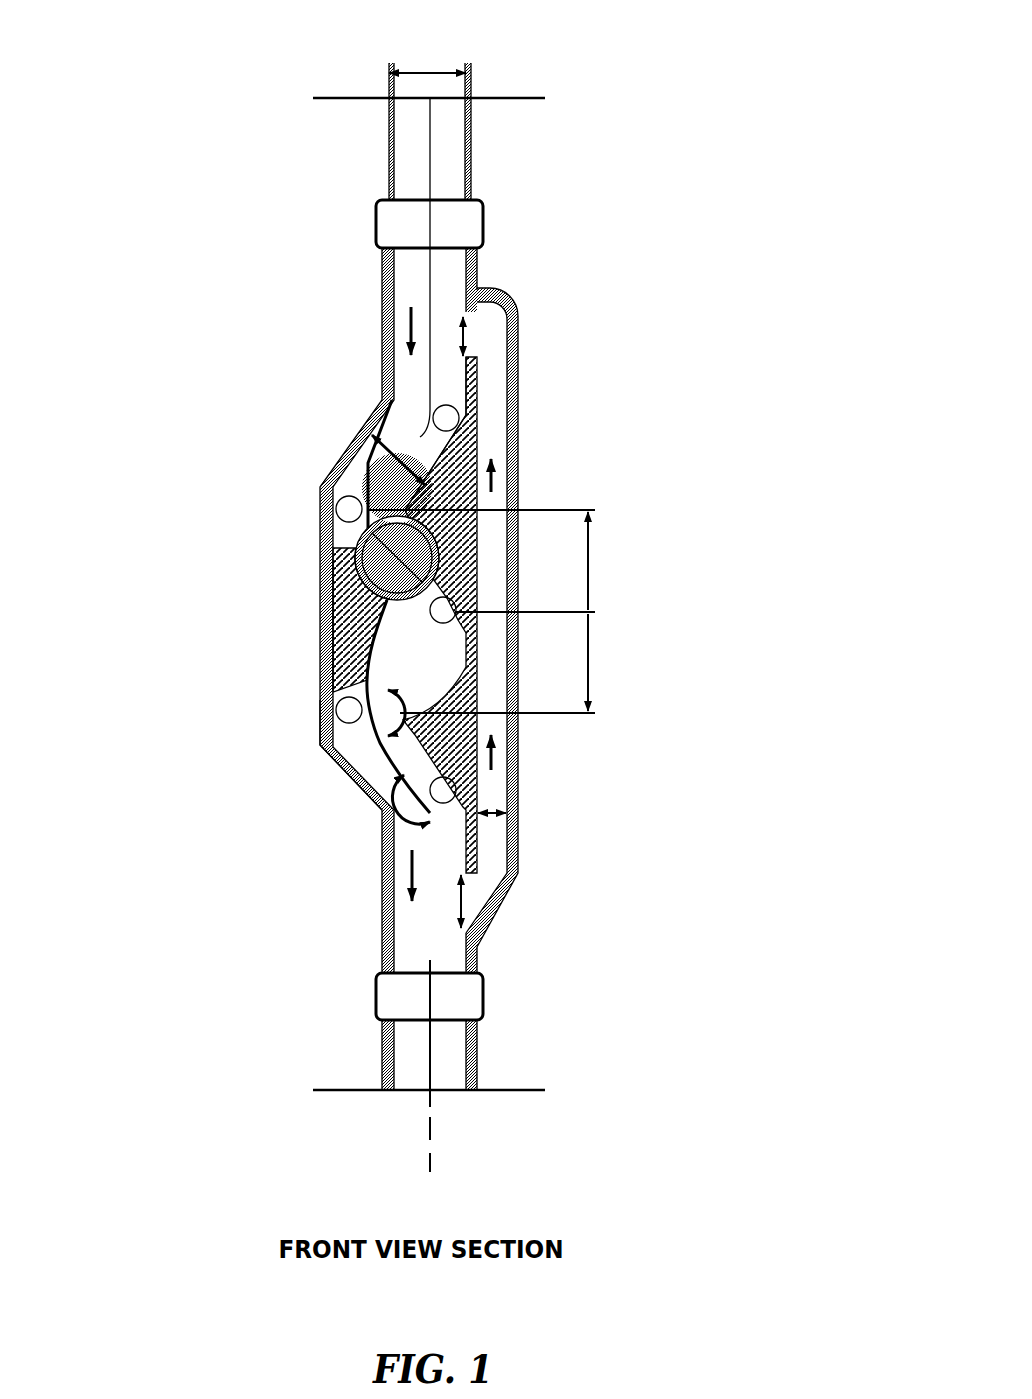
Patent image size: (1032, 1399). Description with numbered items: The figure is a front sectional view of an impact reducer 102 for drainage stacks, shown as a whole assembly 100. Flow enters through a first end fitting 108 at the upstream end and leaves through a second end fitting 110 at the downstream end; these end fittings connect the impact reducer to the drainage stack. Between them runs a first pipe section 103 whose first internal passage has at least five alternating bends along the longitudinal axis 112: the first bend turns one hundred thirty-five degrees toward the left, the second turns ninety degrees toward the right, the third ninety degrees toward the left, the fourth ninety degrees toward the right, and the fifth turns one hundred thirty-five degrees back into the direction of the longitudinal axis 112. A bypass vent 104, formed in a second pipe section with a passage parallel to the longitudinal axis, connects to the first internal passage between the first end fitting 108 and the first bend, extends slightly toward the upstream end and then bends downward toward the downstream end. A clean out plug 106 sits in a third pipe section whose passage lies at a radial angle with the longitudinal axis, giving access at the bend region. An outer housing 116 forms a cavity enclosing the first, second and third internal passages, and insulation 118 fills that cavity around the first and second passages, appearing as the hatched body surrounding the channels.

The impact reducer assembly 100 is at (602, 549).
The impact reducer 102 is at (350, 296).
The first pipe section 103 is at (406, 381).
The bypass vent 104 is at (504, 412).
The clean out plug 106 is at (348, 544).
The first end fitting 108 is at (489, 219).
The second end fitting 110 is at (360, 996).
The longitudinal axis 112 is at (446, 1162).
The outer housing 116 is at (316, 728).
The insulation 118 is at (348, 626).